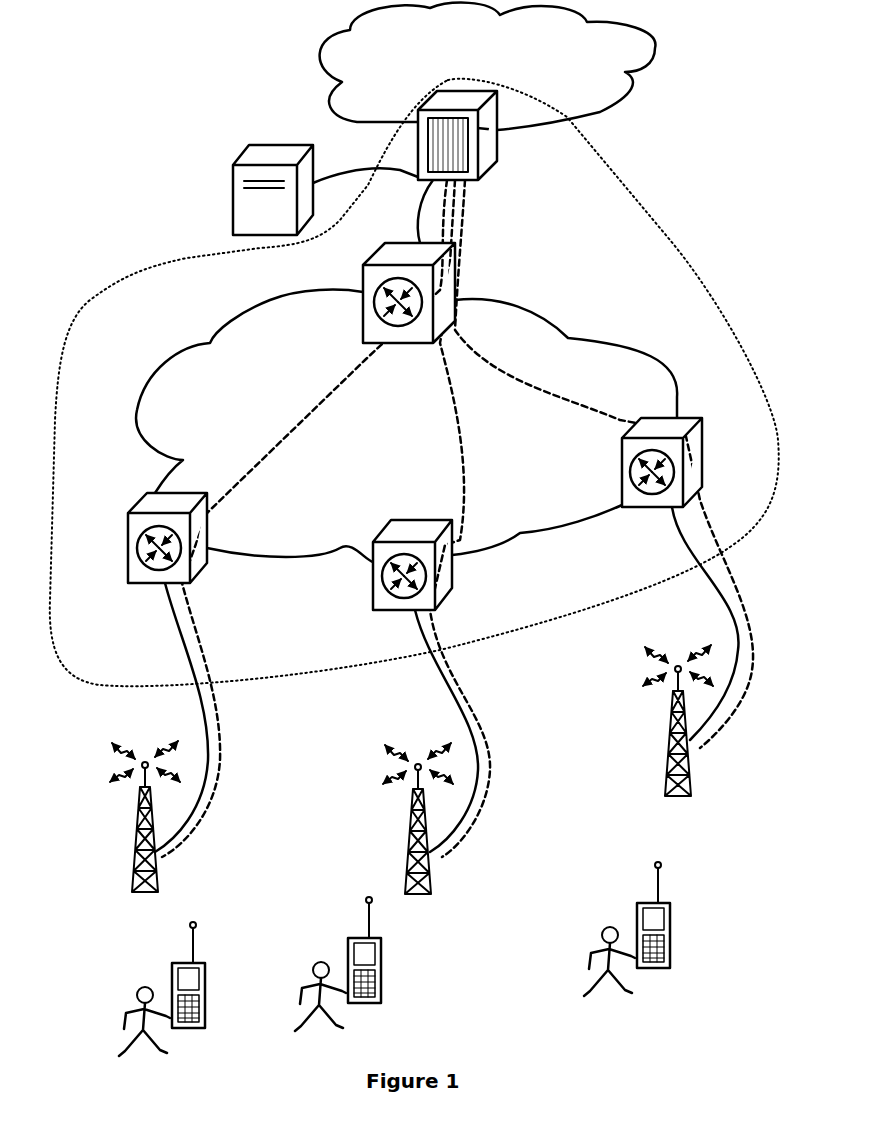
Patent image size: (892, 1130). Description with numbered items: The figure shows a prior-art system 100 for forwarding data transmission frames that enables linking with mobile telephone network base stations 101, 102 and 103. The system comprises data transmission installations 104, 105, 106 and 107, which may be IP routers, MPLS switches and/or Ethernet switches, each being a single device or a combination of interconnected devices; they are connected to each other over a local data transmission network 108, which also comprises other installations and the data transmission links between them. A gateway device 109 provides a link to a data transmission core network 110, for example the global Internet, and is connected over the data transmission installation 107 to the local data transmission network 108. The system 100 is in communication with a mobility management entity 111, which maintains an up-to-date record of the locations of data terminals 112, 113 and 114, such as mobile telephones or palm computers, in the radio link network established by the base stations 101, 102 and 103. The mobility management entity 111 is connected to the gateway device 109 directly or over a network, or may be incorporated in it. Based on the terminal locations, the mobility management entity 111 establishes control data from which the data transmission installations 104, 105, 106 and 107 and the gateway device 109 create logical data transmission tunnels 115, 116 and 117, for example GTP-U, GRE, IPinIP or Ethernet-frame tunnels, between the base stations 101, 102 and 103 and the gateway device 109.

The system 100 is at (635, 190).
The mobile telephone network base station 101 is at (160, 870).
The mobile telephone network base station 102 is at (432, 871).
The mobile telephone network base station 103 is at (668, 786).
The data transmission installation 104 is at (140, 585).
The data transmission installation 105 is at (373, 588).
The data transmission installation 106 is at (690, 418).
The data transmission installation 107 is at (365, 268).
The local data transmission network 108 is at (538, 308).
The gateway device 109 is at (497, 150).
The data transmission core network 110 is at (472, 47).
The mobility management entity 111 is at (233, 190).
The data terminal 112 is at (205, 988).
The data terminal 113 is at (382, 980).
The data terminal 114 is at (670, 940).
The logical data transmission tunnel 115 is at (305, 438).
The logical data transmission tunnel 116 is at (466, 491).
The logical data transmission tunnel 117 is at (576, 387).